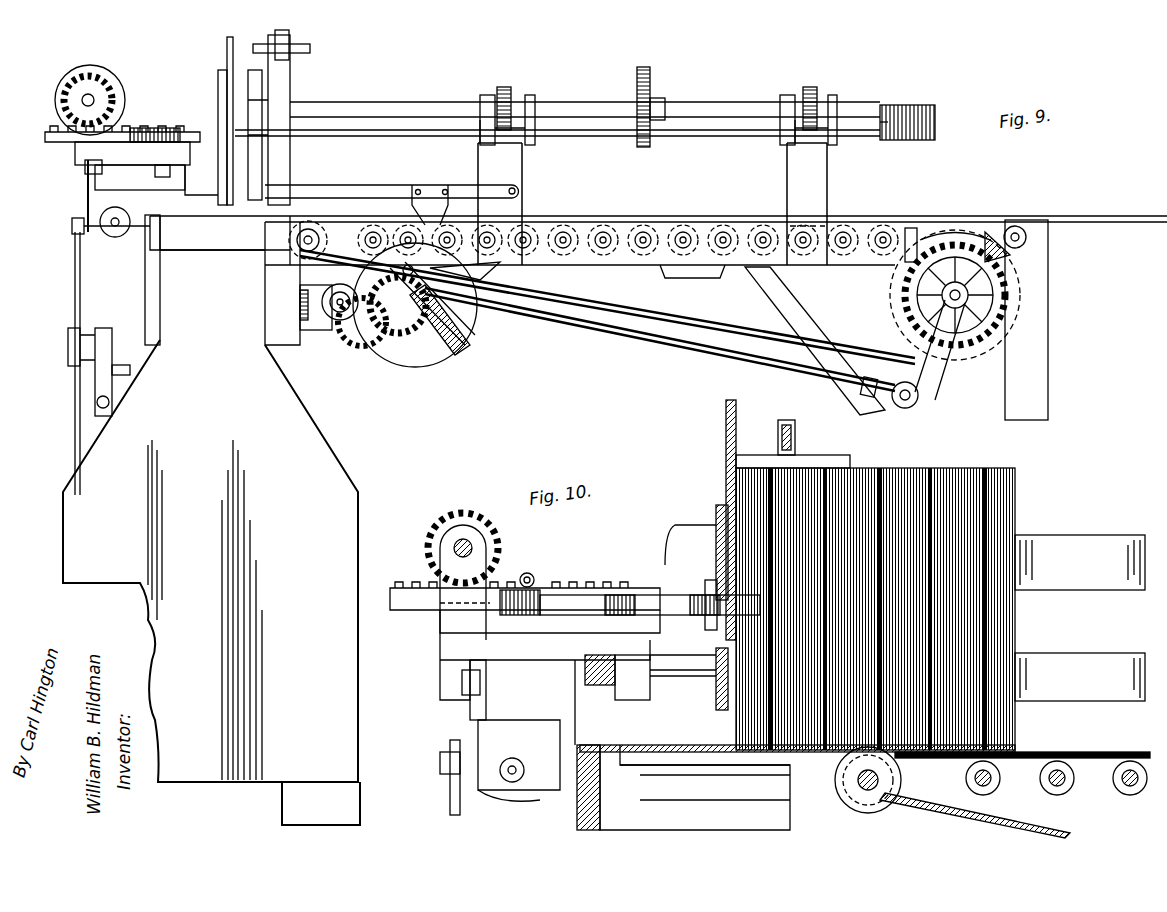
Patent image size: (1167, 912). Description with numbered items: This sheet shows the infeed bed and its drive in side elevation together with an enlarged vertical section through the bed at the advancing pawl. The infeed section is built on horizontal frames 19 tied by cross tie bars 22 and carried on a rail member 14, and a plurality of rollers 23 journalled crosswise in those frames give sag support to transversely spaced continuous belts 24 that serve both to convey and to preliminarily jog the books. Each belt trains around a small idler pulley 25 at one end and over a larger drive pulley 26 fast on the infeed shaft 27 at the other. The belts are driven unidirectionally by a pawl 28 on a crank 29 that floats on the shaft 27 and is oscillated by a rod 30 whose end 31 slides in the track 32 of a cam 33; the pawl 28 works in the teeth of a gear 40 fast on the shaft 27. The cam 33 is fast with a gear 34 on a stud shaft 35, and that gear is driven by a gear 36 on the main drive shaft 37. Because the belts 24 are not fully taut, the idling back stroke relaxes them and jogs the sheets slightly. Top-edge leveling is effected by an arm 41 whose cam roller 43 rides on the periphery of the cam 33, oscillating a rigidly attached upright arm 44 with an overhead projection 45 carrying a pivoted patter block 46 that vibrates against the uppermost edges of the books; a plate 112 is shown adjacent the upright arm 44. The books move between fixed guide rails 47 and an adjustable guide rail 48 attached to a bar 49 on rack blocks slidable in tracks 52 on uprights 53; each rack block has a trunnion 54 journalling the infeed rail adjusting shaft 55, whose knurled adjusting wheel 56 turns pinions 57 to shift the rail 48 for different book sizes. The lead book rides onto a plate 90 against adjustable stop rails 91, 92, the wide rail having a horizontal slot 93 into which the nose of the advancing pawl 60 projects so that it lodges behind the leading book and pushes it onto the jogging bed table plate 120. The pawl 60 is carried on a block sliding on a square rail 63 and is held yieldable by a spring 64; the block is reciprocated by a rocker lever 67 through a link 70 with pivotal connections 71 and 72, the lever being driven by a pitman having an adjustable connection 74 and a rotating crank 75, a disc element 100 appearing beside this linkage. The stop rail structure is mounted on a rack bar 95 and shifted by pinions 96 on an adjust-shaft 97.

In FIG. 9, the guide rail 14 is at (1105, 218).
In FIG. 9, the horizontal frames 19 is at (648, 265).
In FIG. 9, the cross tie bars 22 is at (934, 320).
In FIG. 9, the rollers 23 is at (525, 238).
In FIG. 10, the rollers 23 is at (1120, 785).
In FIG. 9, the continuous belts 24 is at (590, 308).
In FIG. 10, the continuous belts 24 is at (1115, 753).
In FIG. 9, the idler pulleys 25 is at (300, 250).
In FIG. 10, the idler pulleys 25 is at (900, 784).
In FIG. 9, the drive pulleys 26 is at (1030, 296).
In FIG. 9, the infeed shaft 27 is at (962, 300).
In FIG. 9, the pawl 28 is at (1015, 225).
In FIG. 9, the crank 29 is at (930, 385).
In FIG. 9, the rod 30 is at (700, 345).
In FIG. 9, the rod end 31 is at (478, 262).
In FIG. 9, the track 32 is at (465, 350).
In FIG. 9, the cam 33 is at (470, 328).
In FIG. 9, the gear 34 is at (400, 335).
In FIG. 9, the stud shaft 35 is at (420, 330).
In FIG. 9, the gear 36 is at (355, 345).
In FIG. 9, the main drive shaft 37 is at (325, 332).
In FIG. 9, the gear 40 is at (950, 228).
In FIG. 9, the arm 41 is at (320, 185).
In FIG. 9, the cam roller 43 is at (443, 185).
In FIG. 9, the upright arm 44 is at (292, 96).
In FIG. 9, the overhead projection 45 is at (292, 52).
In FIG. 9, the patter block 46 is at (312, 48).
In FIG. 10, the guide rails 47 is at (1042, 652).
In FIG. 9, the adjustable guide rail 48 is at (912, 110).
In FIG. 9, the bar 49 is at (882, 140).
In FIG. 9, the tracks 52 is at (535, 125).
In FIG. 9, the uprights 53 is at (512, 175).
In FIG. 9, the trunnion 54 is at (488, 95).
In FIG. 9, the infeed rail adjusting shaft 55 is at (690, 108).
In FIG. 9, the knurled adjusting wheel 56 is at (652, 72).
In FIG. 9, the pinions 57 is at (507, 87).
In FIG. 10, the advancing pawl 60 is at (650, 595).
In FIG. 9, the square rail 63 is at (160, 160).
In FIG. 10, the square rail 63 is at (608, 688).
In FIG. 10, the spring 64 is at (535, 580).
In FIG. 9, the rocker lever 67 is at (75, 295).
In FIG. 10, the rocker lever 67 is at (450, 802).
In FIG. 10, the link 70 is at (490, 735).
In FIG. 9, the pivotal connection 71 is at (72, 226).
In FIG. 10, the pivotal connection 71 is at (440, 762).
In FIG. 9, the pivotal connection 72 is at (85, 168).
In FIG. 10, the pivotal connection 72 is at (462, 683).
In FIG. 9, the adjustable connection 74 is at (70, 360).
In FIG. 9, the crank 75 is at (112, 352).
In FIG. 9, the plate 90 is at (236, 215).
In FIG. 9, the stop rail 91 is at (226, 55).
In FIG. 10, the stop rail 91 is at (725, 427).
In FIG. 9, the stop rail 92 is at (218, 96).
In FIG. 10, the stop rail 92 is at (716, 553).
In FIG. 9, the horizontal slot 93 is at (218, 145).
In FIG. 10, the horizontal slot 93 is at (705, 625).
In FIG. 9, the rack bar 95 is at (62, 140).
In FIG. 10, the rack bar 95 is at (410, 610).
In FIG. 9, the pinions 96 is at (98, 78).
In FIG. 10, the pinions 96 is at (463, 510).
In FIG. 9, the adjust-shaft 97 is at (94, 100).
In FIG. 10, the adjust-shaft 97 is at (475, 550).
In FIG. 9, the disc 100 is at (215, 195).
In FIG. 10, the disc 100 is at (680, 700).
In FIG. 9, the plate 112 is at (262, 150).
In FIG. 10, the jogging bed or table plate 120 is at (700, 780).